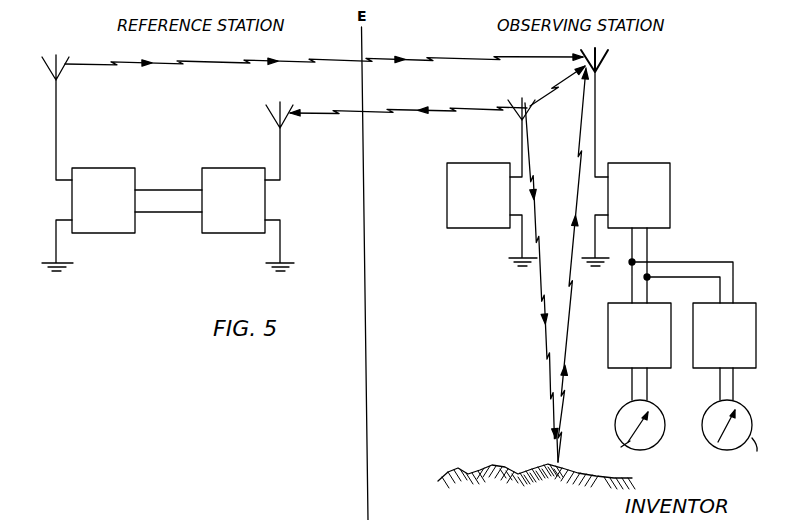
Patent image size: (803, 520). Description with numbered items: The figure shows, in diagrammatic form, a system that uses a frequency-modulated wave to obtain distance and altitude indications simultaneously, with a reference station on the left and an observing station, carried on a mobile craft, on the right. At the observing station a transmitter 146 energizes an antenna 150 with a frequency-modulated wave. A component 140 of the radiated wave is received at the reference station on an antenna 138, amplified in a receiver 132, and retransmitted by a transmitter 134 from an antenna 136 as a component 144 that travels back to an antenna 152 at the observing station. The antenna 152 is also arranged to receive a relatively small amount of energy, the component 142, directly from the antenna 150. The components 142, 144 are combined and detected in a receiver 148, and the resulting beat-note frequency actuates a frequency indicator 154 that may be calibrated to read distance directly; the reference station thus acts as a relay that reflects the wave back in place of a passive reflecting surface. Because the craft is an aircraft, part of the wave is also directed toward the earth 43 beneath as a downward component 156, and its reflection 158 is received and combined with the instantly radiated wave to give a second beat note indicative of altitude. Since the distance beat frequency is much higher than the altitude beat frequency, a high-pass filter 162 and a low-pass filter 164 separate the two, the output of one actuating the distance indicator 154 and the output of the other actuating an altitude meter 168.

The ground / terrain 43 is at (505, 462).
The receiver 132 is at (220, 233).
The transmitter 134 is at (125, 233).
The antenna 136 is at (61, 67).
The antenna 138 is at (277, 115).
The component 140 is at (405, 108).
The component 142 is at (563, 82).
The component 144 is at (245, 63).
The transmitter 146 is at (470, 163).
The receiver 148 is at (662, 163).
The antenna 150 is at (530, 108).
The antenna 152 is at (603, 55).
The frequency indicator 154 is at (660, 411).
The signal path to ground 156 is at (540, 290).
The ground-reflected signal path 158 is at (573, 292).
The high pass filter 162 is at (660, 368).
The low pass filter 164 is at (745, 368).
The altitude indicator 168 is at (749, 411).